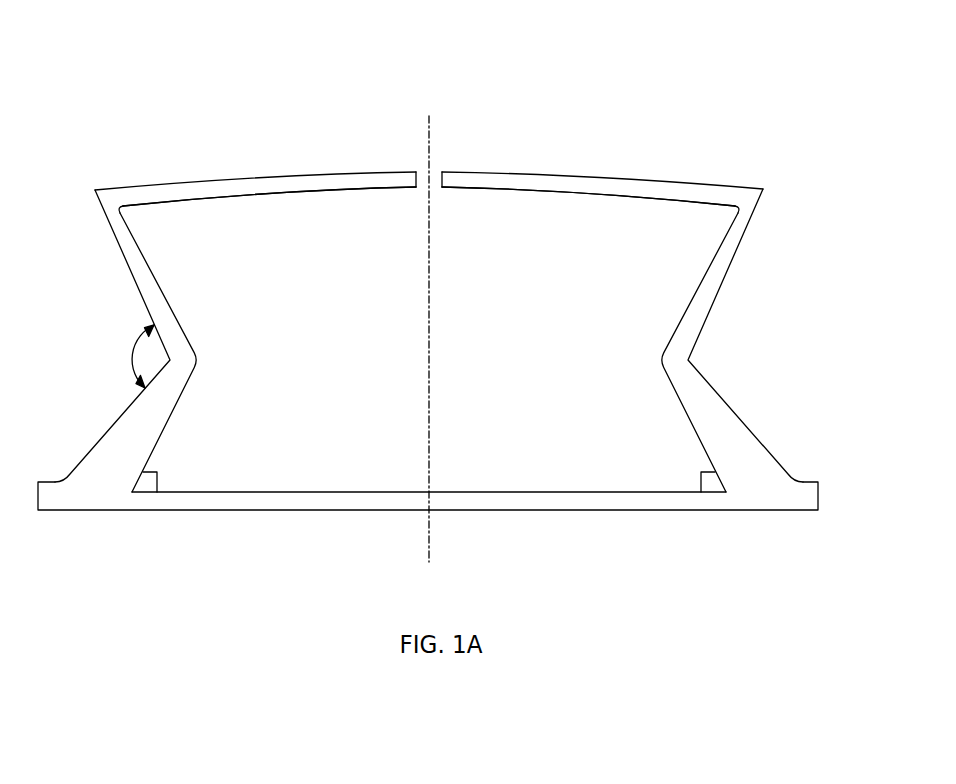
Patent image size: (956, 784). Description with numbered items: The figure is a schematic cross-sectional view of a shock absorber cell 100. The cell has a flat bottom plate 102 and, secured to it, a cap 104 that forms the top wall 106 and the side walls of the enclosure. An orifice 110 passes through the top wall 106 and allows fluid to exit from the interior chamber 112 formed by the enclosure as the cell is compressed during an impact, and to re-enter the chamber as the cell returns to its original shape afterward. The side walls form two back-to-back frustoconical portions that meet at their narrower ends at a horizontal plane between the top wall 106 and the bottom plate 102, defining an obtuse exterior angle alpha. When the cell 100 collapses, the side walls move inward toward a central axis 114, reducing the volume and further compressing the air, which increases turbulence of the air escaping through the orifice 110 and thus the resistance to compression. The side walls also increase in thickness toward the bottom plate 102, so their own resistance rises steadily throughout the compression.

The shock absorber cell 100 is at (711, 63).
The bottom plate 102 is at (403, 506).
The cap 104 is at (142, 185).
The top wall 106 is at (518, 172).
The orifice 110 is at (420, 174).
The interior chamber 112 is at (290, 210).
The central axis 114 is at (430, 528).